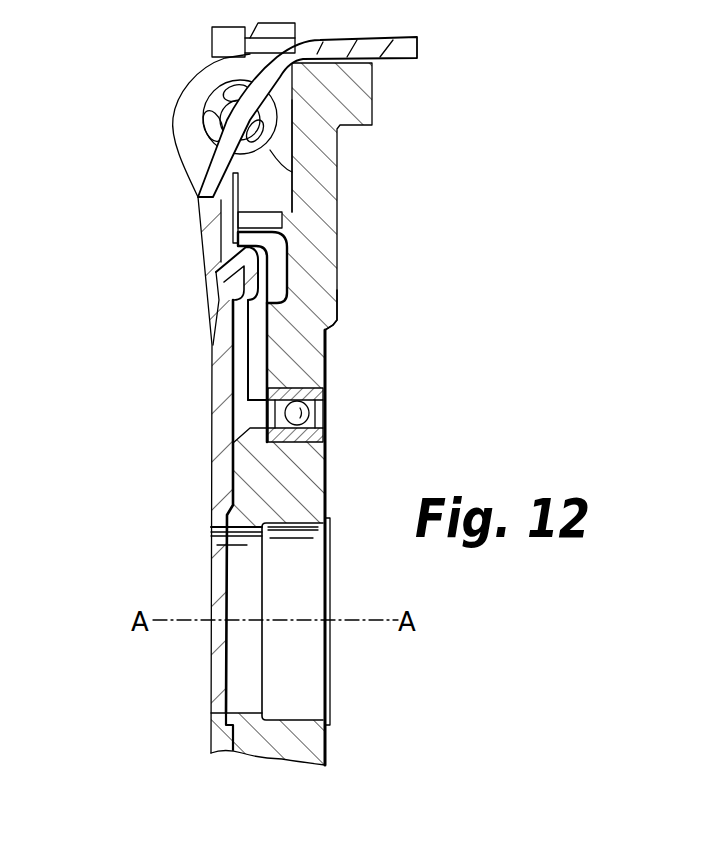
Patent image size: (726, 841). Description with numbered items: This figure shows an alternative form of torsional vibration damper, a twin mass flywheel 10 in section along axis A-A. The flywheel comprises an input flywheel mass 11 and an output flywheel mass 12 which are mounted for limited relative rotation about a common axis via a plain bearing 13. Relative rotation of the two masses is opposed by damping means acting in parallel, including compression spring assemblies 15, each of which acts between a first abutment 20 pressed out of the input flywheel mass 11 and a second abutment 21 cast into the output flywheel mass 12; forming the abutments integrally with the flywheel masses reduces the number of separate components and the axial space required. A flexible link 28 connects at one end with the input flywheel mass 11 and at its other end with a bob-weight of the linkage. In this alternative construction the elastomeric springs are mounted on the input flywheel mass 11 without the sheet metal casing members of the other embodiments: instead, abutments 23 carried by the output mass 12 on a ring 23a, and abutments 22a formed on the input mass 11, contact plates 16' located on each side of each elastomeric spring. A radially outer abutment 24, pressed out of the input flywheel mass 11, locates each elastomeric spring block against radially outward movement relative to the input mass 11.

The twin mass flywheel 10 is at (190, 242).
The input flywheel mass 11 is at (222, 380).
The output flywheel mass 12 is at (303, 347).
The plain bearing 13 is at (327, 435).
The compression spring assembly 15 is at (220, 100).
The plate 16' is at (357, 317).
The first abutment 20 is at (267, 90).
The second abutment 21 is at (283, 162).
The abutment 22a is at (247, 277).
The abutment 23 is at (278, 245).
The ring 23a is at (257, 368).
The radially outer abutment 24 is at (278, 227).
The flexible link 28 is at (270, 200).